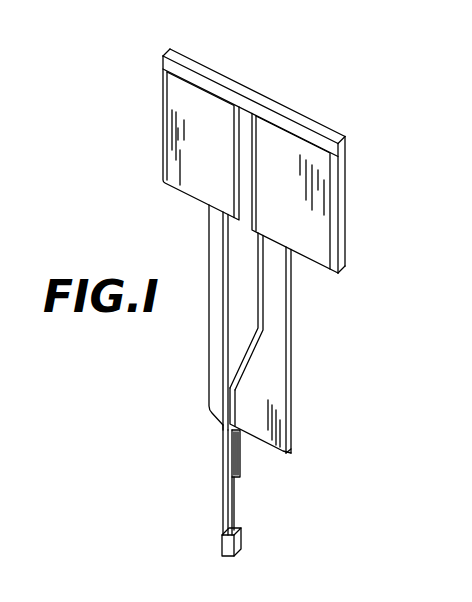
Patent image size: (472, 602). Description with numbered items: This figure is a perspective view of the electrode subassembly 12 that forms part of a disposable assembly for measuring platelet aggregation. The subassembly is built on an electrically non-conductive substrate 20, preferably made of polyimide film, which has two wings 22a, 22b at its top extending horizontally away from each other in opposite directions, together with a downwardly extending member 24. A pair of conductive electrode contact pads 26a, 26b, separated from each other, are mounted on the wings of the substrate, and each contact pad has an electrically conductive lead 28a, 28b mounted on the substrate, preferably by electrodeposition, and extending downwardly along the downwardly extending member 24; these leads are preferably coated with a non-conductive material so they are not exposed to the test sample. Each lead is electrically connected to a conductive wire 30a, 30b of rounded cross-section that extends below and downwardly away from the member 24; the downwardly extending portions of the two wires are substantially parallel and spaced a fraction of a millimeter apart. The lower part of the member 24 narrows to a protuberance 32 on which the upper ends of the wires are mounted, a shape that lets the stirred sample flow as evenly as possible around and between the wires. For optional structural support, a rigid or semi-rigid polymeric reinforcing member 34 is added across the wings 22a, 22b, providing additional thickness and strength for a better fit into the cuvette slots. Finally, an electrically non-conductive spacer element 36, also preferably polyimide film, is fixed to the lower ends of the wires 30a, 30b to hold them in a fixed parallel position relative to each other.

The electrode subassembly 12 is at (303, 90).
The electrically non-conductive substrate 20 is at (288, 380).
The wing 22a is at (188, 203).
The wing 22b is at (332, 192).
The downwardly extending member 24 is at (268, 397).
The conductive electrode contact pad 26a is at (188, 112).
The conductive electrode contact pad 26b is at (300, 229).
The electrically conductive lead 28a is at (214, 362).
The electrically conductive lead 28b is at (260, 330).
The conductive wire 30a is at (229, 507).
The conductive wire 30b is at (236, 497).
The protuberance 32 is at (241, 457).
The reinforcing member 34 is at (322, 133).
The spacer element 36 is at (241, 543).